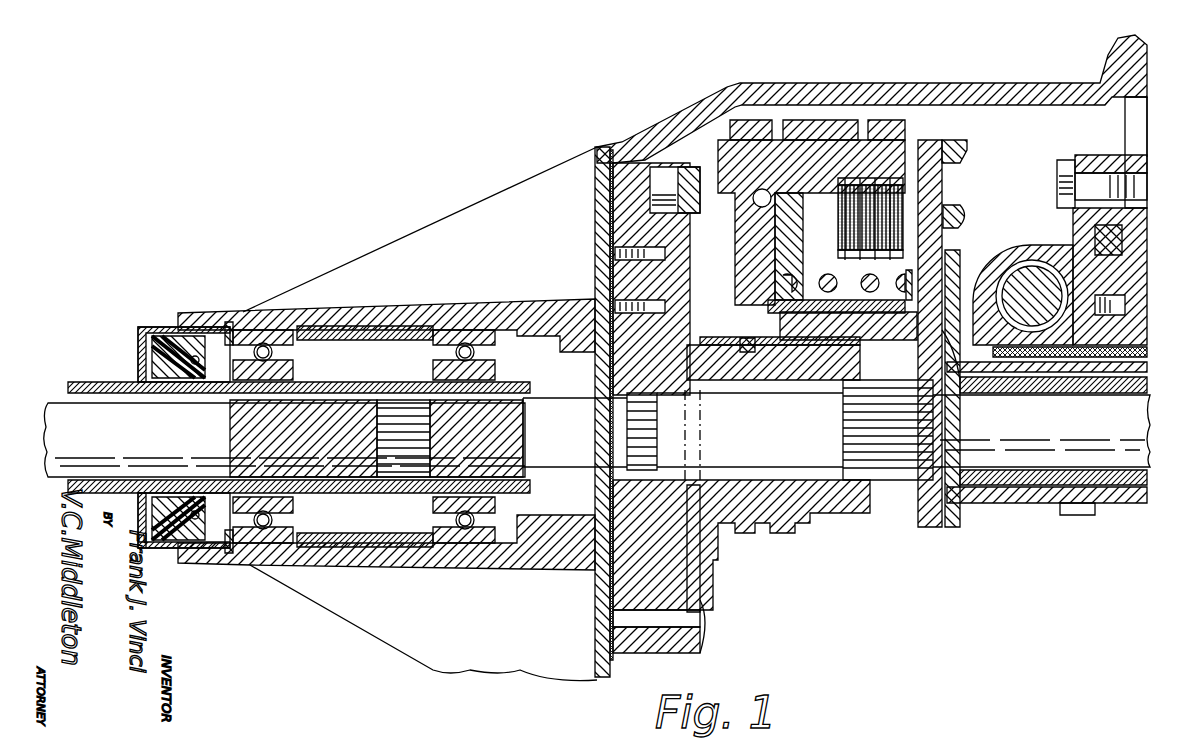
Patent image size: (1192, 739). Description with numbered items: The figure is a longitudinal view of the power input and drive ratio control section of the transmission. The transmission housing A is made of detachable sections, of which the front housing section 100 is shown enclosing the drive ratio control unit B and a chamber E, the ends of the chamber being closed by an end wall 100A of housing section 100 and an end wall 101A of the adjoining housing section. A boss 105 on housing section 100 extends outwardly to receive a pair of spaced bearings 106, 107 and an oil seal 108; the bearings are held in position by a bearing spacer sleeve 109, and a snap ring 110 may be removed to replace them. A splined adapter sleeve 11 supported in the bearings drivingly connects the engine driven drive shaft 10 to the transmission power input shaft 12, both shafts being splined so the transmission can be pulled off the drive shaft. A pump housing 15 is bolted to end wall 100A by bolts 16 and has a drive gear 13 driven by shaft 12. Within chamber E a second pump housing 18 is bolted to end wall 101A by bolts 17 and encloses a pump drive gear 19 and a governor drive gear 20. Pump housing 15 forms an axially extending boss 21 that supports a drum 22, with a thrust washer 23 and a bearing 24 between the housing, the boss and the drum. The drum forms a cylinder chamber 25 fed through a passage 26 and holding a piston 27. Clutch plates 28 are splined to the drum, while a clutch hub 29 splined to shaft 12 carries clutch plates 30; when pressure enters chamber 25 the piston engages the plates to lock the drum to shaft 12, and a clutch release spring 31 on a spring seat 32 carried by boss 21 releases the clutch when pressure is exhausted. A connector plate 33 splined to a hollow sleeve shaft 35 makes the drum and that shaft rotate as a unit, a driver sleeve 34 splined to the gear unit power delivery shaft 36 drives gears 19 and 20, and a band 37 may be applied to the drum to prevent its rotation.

The drive shaft 10 is at (116, 415).
The splined adapter sleeve 11 is at (299, 420).
The transmission power input shaft 12 is at (553, 405).
The drive gear 13 is at (612, 350).
The pump housing 15 is at (665, 170).
The bolts 16 is at (697, 175).
The bolts 17 is at (1065, 163).
The pump housing 18 is at (1045, 250).
The pump drive gear 19 is at (1125, 305).
The governor drive gear 20 is at (1020, 285).
The axially extending boss 21 is at (830, 500).
The drum 22 is at (756, 152).
The thrust washer 23 is at (722, 300).
The bearing 24 is at (845, 340).
The cylinder chamber 25 is at (753, 198).
The passage 26 is at (748, 380).
The piston 27 is at (776, 225).
The clutch plates 28 is at (855, 240).
The clutch hub 29 is at (925, 335).
The clutch plates 30 is at (849, 276).
The clutch release spring 31 is at (836, 279).
The spring seat 32 is at (896, 282).
The connector plate 33 is at (948, 245).
The driver sleeve 34 is at (1000, 346).
The hollow sleeve shaft 35 is at (1140, 383).
The gear unit power delivery shaft 36 is at (1147, 356).
The band 37 is at (893, 128).
The housing section 100 is at (866, 105).
The end wall 100A is at (597, 185).
The end wall 101A is at (1140, 238).
The boss 105 is at (405, 315).
The bearing 106 is at (467, 348).
The bearing 107 is at (263, 350).
The oil seal 108 is at (170, 340).
The bearing spacer sleeve 109 is at (360, 335).
The snap ring 110 is at (228, 322).
The transmission housing A is at (834, 82).
The drive ratio control unit B is at (970, 140).
The chamber E is at (1040, 107).